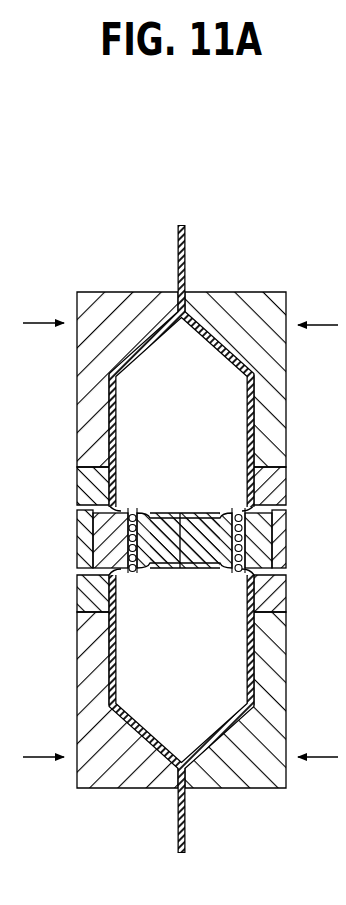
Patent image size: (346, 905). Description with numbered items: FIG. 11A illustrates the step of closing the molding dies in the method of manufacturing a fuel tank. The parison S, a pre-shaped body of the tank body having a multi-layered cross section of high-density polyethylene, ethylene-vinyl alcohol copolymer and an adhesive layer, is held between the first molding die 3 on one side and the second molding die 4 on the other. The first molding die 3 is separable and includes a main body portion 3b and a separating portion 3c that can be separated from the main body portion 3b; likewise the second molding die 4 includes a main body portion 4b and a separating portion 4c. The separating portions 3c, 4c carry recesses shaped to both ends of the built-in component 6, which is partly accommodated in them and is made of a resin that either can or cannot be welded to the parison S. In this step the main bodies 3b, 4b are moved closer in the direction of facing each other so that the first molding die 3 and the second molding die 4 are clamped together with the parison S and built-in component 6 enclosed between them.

The first molding die 3 is at (101, 516).
The main body portion 3b is at (77, 387).
The separating portion 3c is at (77, 488).
The second molding die 4 is at (261, 516).
The main body portion 4b is at (285, 387).
The separating portion 4c is at (285, 482).
The built-in component 6 is at (180, 513).
The parison S is at (188, 233).